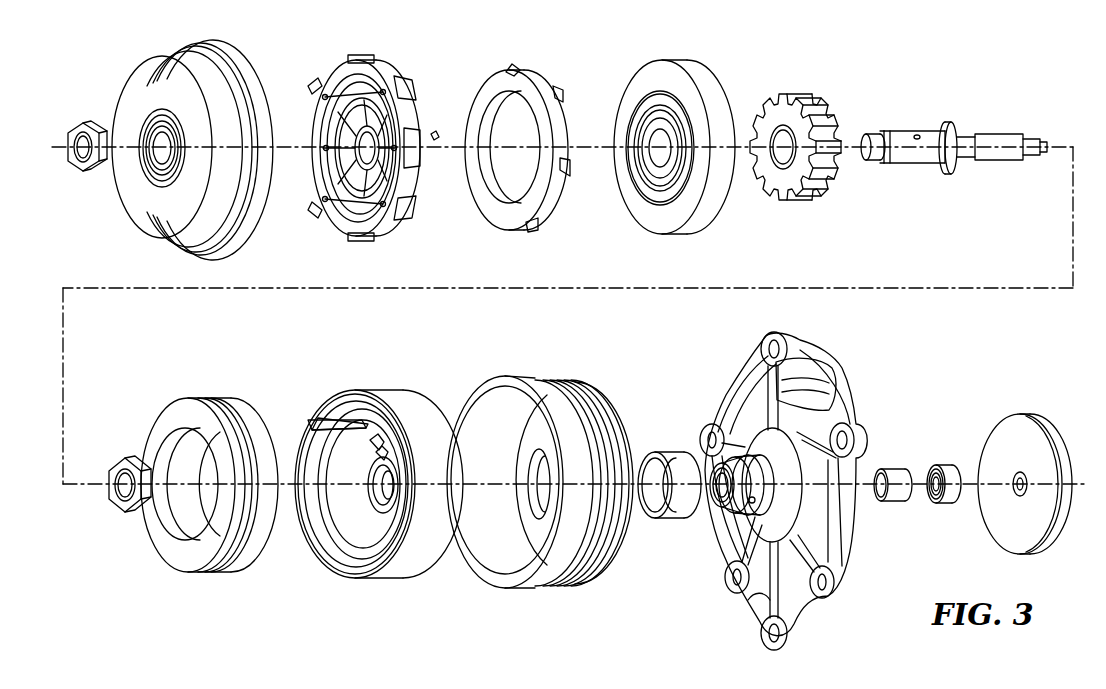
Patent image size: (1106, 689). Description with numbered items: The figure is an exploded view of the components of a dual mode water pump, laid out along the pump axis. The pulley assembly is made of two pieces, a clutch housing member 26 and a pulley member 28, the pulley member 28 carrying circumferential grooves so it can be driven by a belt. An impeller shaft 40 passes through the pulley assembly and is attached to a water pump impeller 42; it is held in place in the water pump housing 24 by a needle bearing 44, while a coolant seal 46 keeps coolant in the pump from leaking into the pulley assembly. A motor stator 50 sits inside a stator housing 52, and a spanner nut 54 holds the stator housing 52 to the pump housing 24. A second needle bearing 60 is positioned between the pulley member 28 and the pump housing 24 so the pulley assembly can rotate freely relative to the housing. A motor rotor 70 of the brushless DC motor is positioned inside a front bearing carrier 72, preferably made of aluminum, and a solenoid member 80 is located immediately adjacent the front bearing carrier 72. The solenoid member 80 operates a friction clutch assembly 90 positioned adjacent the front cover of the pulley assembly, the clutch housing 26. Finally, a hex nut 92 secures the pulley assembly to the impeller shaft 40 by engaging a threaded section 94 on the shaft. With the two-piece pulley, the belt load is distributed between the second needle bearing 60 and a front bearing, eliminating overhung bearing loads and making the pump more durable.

The water pump housing 24 is at (806, 346).
The clutch housing member 26 is at (182, 42).
The pulley member 28 is at (557, 380).
The impeller shaft 40 is at (954, 153).
The water pump impeller 42 is at (1025, 413).
The needle bearing 44 is at (886, 468).
The coolant seal 46 is at (940, 465).
The motor stator 50 is at (215, 400).
The stator housing 52 is at (405, 392).
The spanner nut 54 is at (117, 470).
The second needle bearing 60 is at (664, 452).
The motor rotor 70 is at (794, 98).
The front bearing carrier 72 is at (667, 60).
The solenoid member 80 is at (520, 70).
The friction clutch assembly 90 is at (362, 56).
The hex nut 92 is at (90, 127).
The threaded section 94 is at (867, 133).